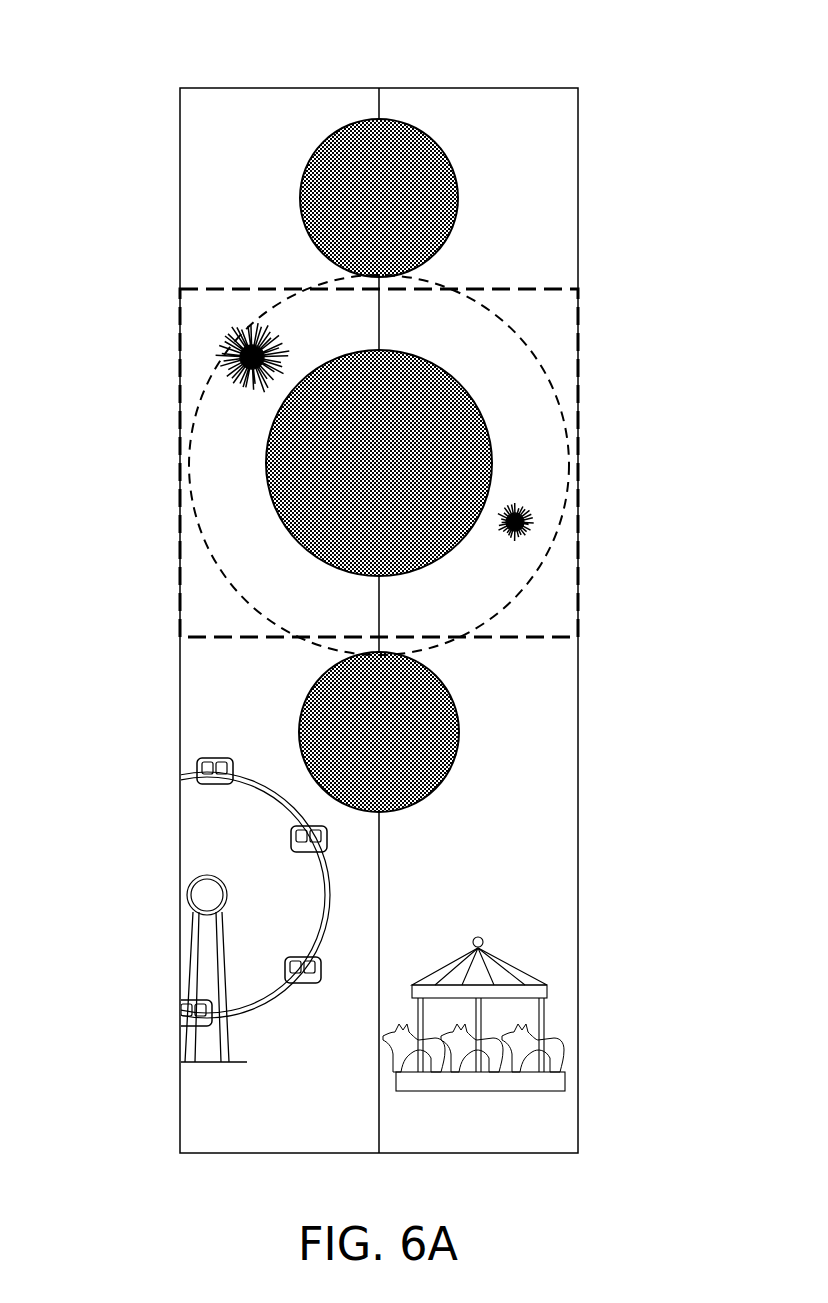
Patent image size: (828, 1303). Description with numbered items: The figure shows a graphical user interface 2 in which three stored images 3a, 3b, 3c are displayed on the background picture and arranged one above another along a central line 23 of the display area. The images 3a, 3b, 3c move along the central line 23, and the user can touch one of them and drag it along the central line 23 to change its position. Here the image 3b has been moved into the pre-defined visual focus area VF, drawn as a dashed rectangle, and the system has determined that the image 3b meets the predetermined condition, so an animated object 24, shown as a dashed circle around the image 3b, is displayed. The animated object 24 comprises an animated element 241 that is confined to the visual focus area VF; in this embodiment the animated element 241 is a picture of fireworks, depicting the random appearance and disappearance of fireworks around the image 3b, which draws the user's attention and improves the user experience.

The graphical user interface 2 is at (80, 39).
The image 3a is at (305, 165).
The image 3b is at (275, 422).
The image 3c is at (307, 693).
The central line 23 is at (380, 102).
The animated object 24 is at (210, 556).
The animated element 241 is at (531, 521).
The visual focus area VF is at (520, 640).